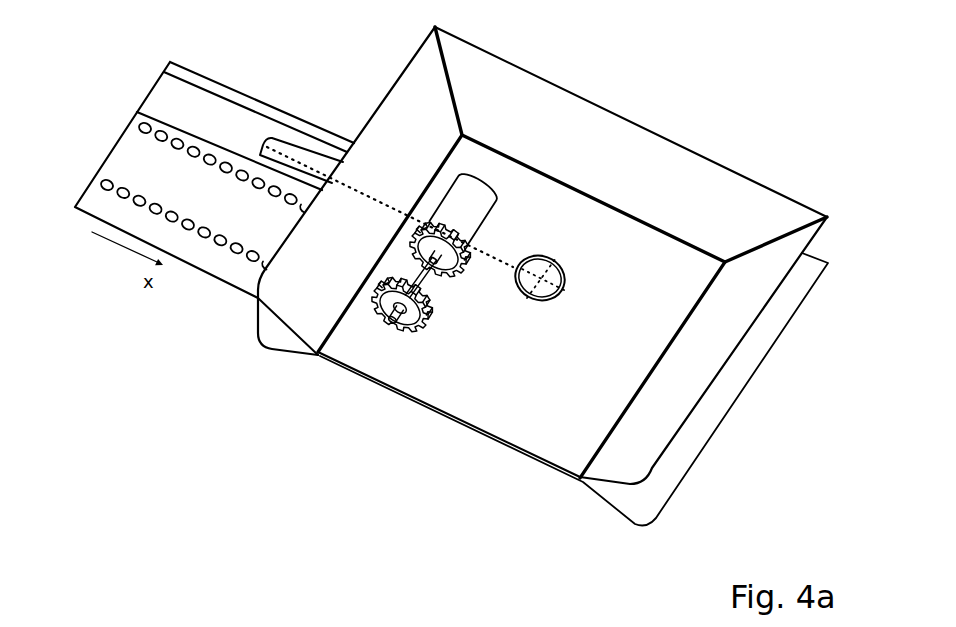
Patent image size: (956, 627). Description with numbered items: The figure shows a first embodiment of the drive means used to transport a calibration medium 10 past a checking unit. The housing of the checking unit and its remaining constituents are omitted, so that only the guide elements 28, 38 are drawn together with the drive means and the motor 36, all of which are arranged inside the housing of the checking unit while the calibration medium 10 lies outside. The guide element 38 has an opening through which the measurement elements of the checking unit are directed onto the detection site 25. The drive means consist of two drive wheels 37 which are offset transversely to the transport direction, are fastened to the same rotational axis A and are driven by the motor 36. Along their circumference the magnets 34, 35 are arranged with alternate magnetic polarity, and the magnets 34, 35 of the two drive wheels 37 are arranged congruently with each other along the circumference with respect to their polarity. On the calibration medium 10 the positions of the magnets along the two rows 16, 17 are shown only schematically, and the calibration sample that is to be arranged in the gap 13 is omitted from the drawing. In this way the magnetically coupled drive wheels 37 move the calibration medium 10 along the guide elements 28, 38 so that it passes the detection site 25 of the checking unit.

The calibration medium 10 is at (235, 90).
The row of magnets 16 is at (119, 115).
The row of magnets 17 is at (80, 176).
The gap 13 is at (260, 151).
The motor 36 is at (498, 199).
The detection site 25 is at (546, 281).
The magnet 34 is at (434, 324).
The magnet 35 is at (430, 313).
The drive wheel 37 is at (406, 327).
The guide element 38 is at (598, 484).
The guide element 28 is at (626, 526).
The rotational axis A is at (386, 326).